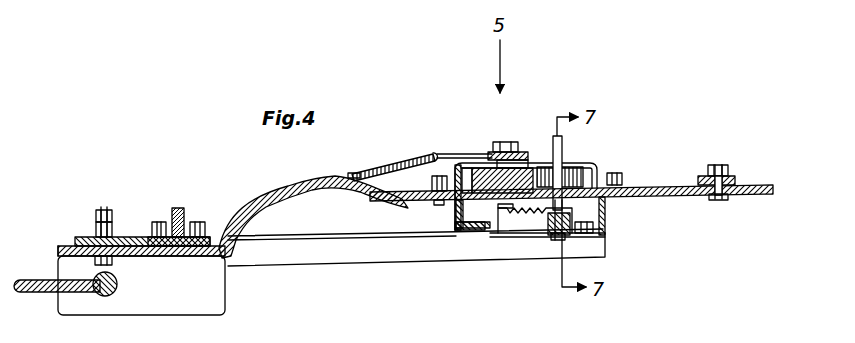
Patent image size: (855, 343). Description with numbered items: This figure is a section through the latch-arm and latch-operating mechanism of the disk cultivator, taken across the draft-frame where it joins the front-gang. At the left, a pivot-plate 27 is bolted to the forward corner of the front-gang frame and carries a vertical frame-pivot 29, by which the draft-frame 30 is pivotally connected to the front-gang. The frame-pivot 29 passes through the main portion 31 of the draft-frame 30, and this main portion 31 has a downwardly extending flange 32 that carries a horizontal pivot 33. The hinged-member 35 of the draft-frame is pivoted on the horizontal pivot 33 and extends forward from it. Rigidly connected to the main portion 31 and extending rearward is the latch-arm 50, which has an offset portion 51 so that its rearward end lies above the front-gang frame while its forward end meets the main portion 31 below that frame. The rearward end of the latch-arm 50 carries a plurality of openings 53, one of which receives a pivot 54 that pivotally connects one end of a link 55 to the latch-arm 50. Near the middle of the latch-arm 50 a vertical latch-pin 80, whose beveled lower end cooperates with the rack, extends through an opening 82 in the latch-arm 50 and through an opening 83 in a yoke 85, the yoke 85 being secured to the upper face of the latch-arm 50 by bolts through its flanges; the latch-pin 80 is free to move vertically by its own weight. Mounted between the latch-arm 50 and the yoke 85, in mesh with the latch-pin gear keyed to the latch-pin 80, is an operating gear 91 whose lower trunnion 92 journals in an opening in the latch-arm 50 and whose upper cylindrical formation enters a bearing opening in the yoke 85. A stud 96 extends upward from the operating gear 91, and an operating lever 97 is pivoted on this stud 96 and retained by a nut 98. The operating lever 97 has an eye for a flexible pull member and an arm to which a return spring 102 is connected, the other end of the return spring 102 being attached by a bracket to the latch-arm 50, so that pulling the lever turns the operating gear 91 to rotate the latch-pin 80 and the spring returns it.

The pivot-plate 27 is at (124, 240).
The frame-pivot 29 is at (104, 209).
The draft-frame 30 is at (162, 222).
The main portion 31 is at (65, 246).
The flange 32 is at (141, 285).
The horizontal pivot 33 is at (100, 297).
The hinged-member 35 is at (35, 280).
The latch-arm 50 is at (405, 198).
The offset portion 51 is at (271, 213).
The openings 53 is at (716, 185).
The pivot 54 is at (719, 165).
The link 55 is at (700, 178).
The latch-pin 80 is at (552, 213).
The opening 82 is at (592, 186).
The opening 83 is at (568, 162).
The yoke 85 is at (600, 160).
The operating gear 91 is at (455, 200).
The lower trunnion 92 is at (500, 205).
The stud 96 is at (510, 140).
The operating lever 97 is at (452, 156).
The nut 98 is at (517, 140).
The return spring 102 is at (402, 157).